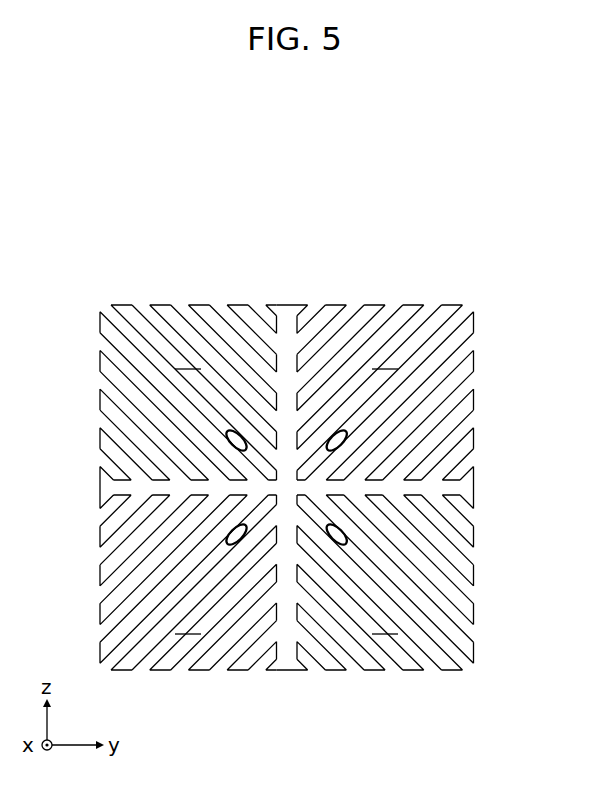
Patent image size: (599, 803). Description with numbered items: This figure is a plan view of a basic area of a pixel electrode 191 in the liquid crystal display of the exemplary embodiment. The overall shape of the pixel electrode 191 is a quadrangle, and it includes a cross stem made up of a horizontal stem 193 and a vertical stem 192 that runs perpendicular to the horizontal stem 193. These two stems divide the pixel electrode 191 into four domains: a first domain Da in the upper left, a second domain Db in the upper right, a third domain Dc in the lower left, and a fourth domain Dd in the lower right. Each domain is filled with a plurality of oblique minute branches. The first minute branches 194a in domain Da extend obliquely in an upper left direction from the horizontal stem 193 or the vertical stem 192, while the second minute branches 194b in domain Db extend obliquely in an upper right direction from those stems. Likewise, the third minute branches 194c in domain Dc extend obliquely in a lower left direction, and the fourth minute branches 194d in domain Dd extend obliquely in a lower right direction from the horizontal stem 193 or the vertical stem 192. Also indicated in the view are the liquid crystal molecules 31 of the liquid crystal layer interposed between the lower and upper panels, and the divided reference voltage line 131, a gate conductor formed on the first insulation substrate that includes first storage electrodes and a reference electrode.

The pixel electrode 191 is at (311, 197).
The first minute branches 194a is at (218, 316).
The second minute branches 194b is at (434, 316).
The third minute branches 194c is at (100, 633).
The fourth minute branches 194d is at (466, 633).
The vertical stem 192 is at (298, 441).
The horizontal stem 193 is at (415, 498).
The divided reference voltage line 131 is at (233, 440).
The liquid crystal molecules 31 is at (343, 441).